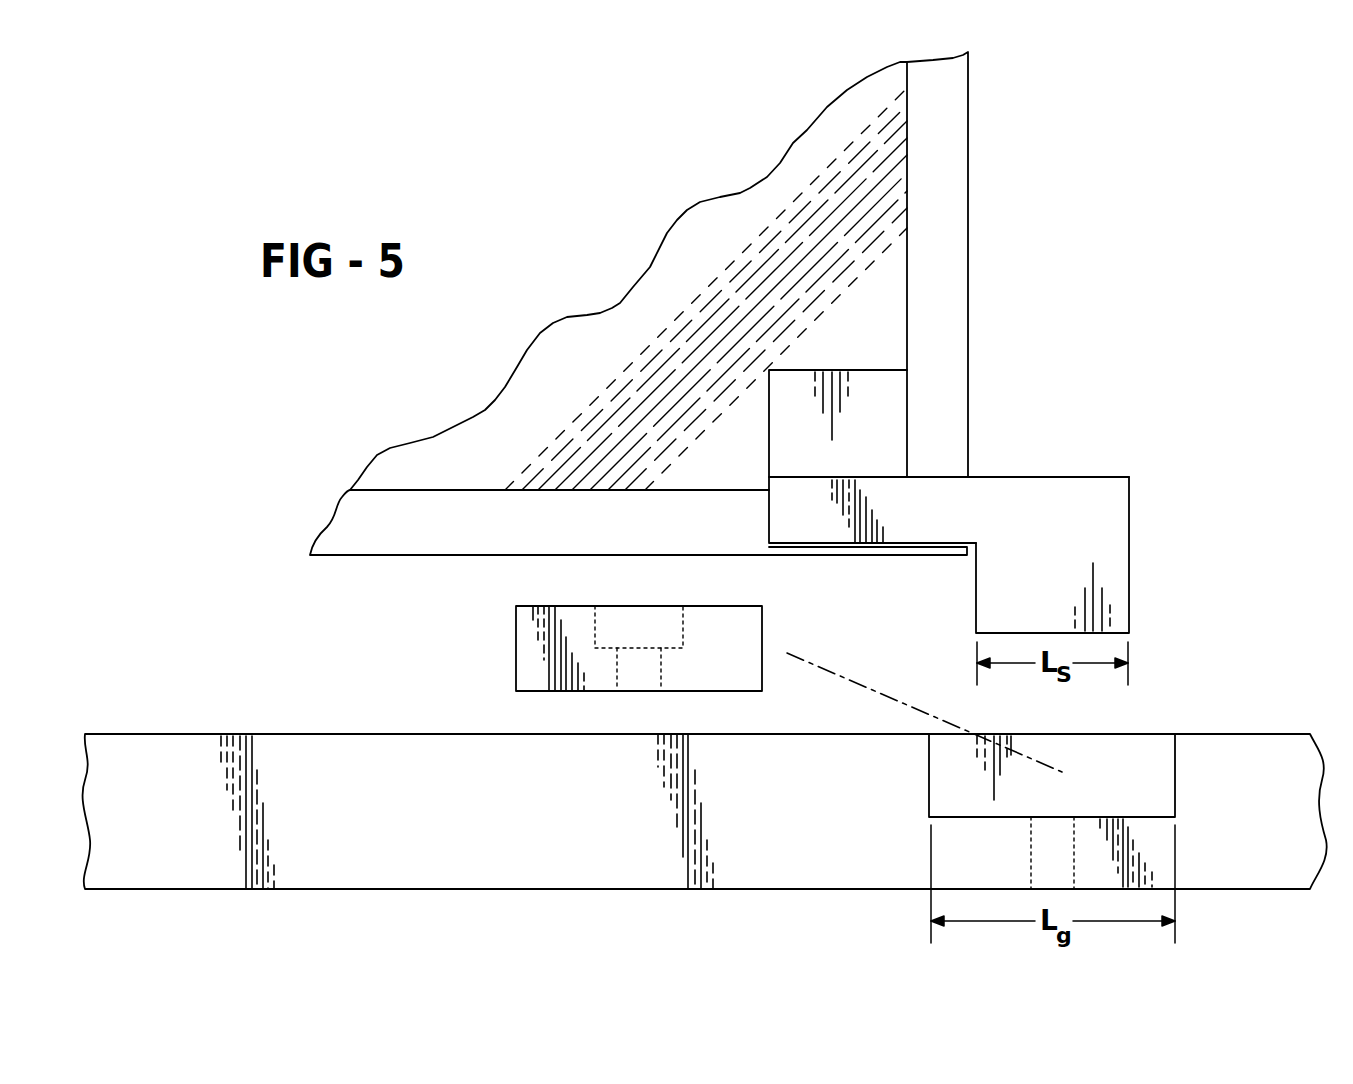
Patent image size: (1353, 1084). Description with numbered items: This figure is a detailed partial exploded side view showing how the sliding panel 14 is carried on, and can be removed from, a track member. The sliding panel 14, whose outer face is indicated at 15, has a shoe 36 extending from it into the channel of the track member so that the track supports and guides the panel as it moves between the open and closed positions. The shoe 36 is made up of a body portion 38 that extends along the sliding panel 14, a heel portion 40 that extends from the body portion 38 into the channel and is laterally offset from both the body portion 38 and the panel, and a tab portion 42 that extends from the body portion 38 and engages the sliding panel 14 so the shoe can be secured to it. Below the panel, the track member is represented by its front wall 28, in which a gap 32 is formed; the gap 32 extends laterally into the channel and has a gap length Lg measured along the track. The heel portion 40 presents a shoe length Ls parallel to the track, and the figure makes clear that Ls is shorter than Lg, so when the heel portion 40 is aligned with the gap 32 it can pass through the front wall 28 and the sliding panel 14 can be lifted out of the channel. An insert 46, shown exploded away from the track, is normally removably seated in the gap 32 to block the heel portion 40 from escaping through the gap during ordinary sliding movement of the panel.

The sliding panel 14 is at (850, 320).
The mounting surface 15 is at (968, 163).
The front wall 28 is at (278, 734).
The gap 32 is at (1145, 760).
The shoe 36 is at (1001, 503).
The body portion 38 is at (960, 511).
The heel portion 40 is at (1113, 578).
The tab portion 42 is at (892, 402).
The insert 46 is at (528, 650).